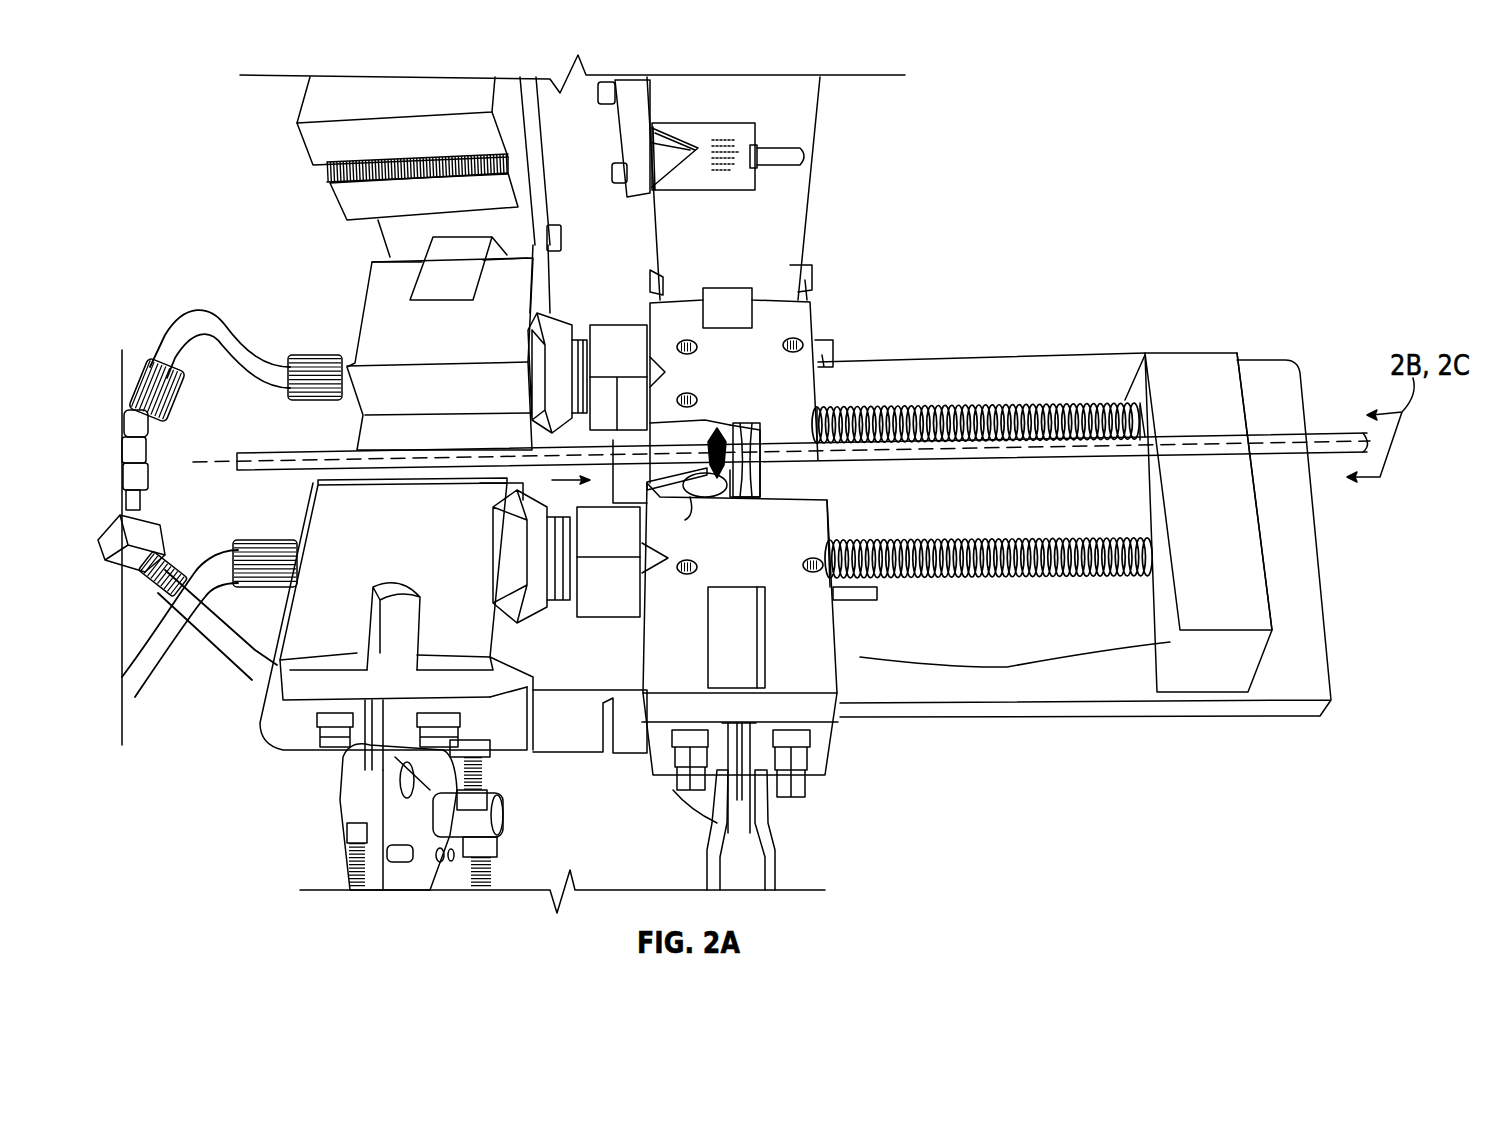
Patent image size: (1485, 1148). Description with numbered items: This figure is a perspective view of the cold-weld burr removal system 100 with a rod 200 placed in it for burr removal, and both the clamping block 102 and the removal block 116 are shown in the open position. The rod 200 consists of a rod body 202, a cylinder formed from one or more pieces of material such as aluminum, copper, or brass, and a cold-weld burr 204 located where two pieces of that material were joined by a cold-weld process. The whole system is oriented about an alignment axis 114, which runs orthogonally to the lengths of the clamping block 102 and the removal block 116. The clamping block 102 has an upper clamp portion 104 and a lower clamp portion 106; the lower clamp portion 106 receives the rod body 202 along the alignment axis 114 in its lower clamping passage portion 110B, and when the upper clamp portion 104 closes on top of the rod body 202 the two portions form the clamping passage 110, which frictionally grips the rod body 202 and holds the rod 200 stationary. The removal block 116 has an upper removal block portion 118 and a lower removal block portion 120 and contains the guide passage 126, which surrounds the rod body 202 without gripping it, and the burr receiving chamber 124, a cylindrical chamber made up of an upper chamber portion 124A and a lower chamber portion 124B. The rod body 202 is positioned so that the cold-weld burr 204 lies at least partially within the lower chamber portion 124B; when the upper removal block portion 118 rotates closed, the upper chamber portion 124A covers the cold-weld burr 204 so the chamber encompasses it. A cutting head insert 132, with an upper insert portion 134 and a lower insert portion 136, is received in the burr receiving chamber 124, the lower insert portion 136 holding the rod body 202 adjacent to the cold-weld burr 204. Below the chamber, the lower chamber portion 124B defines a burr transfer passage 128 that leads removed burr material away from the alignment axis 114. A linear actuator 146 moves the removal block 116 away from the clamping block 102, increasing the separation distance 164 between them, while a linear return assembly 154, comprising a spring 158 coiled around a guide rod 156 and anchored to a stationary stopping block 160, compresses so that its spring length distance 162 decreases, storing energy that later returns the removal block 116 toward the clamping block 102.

The cold-weld burr removal system 100 is at (1053, 108).
The clamping block 102 is at (300, 647).
The upper clamp portion 104 is at (333, 147).
The lower clamp portion 106 is at (337, 553).
The clamping passage 110 is at (352, 187).
The lower clamping passage portion 110B is at (440, 448).
The alignment axis 114 is at (222, 462).
The removal block 116 is at (813, 653).
The upper removal block portion 118 is at (770, 210).
The lower removal block portion 120 is at (797, 323).
The burr receiving chamber 124 is at (745, 475).
The upper chamber portion 124A is at (715, 143).
The lower chamber portion 124B is at (737, 433).
The guide passage 126 is at (790, 157).
The burr transfer passage 128 is at (720, 495).
The cutting head insert 132 is at (627, 187).
The upper insert portion 134 is at (632, 137).
The lower insert portion 136 is at (697, 490).
The linear actuator 146 is at (613, 327).
The linear return assembly 154 is at (1190, 353).
The guide rod 156 is at (1125, 403).
The spring 158 is at (947, 410).
The stopping block 160 is at (1250, 582).
The spring length distance 162 is at (1007, 667).
The separation distance 164 is at (567, 692).
The rod 200 is at (307, 455).
The rod body 202 is at (968, 455).
The cold-weld burr 204 is at (717, 440).